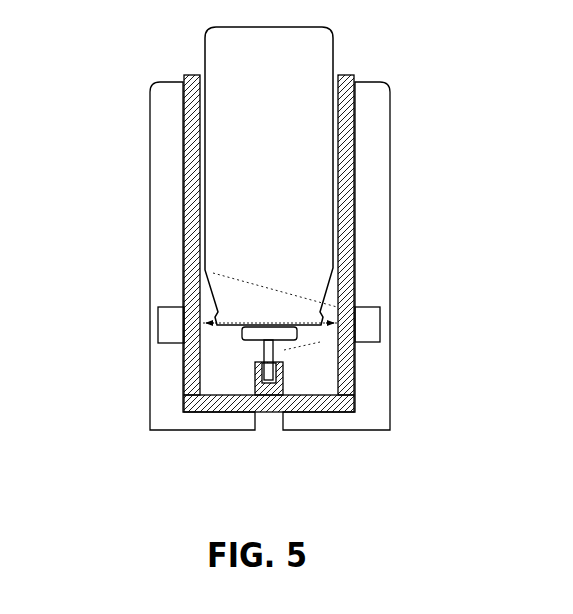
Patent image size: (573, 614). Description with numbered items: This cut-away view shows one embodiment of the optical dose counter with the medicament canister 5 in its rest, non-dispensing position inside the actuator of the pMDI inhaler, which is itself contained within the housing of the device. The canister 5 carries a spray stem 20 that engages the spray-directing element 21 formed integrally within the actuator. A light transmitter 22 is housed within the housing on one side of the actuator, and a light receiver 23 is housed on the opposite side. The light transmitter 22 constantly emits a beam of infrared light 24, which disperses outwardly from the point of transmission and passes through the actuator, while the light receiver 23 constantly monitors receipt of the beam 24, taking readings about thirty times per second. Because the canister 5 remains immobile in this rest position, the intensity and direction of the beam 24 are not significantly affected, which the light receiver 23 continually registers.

The medicament canister 5 is at (275, 195).
The spray stem 20 is at (283, 352).
The spray-directing element 21 is at (252, 385).
The light transmitter 22 is at (368, 325).
The light receiver 23 is at (172, 325).
The beam of infrared light 24 is at (325, 341).